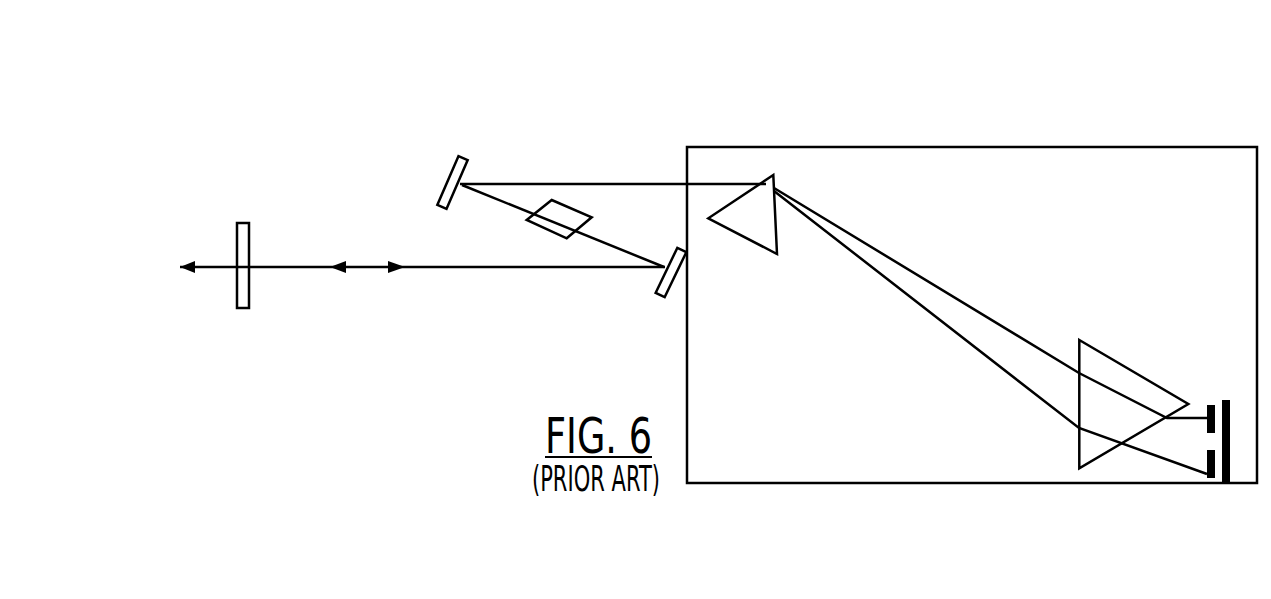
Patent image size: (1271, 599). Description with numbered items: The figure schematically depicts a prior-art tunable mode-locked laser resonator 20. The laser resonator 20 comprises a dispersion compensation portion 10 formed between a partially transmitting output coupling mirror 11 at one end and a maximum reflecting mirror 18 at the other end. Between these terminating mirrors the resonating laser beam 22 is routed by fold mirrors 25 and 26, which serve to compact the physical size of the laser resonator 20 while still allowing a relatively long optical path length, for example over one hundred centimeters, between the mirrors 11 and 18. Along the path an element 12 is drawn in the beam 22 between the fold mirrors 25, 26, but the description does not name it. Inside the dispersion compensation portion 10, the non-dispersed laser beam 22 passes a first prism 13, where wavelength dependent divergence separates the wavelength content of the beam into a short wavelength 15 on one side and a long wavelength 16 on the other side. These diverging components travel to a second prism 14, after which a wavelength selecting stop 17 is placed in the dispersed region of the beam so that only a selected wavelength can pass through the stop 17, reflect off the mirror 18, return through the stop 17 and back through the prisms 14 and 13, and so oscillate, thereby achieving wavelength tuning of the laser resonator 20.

The dispersion compensation portion 10 is at (1033, 147).
The output coupling mirror 11 is at (222, 242).
The modulator 12 is at (538, 208).
The first prism 13 is at (742, 243).
The second prism 14 is at (1079, 332).
The short wavelength 15 is at (970, 352).
The long wavelength 16 is at (939, 283).
The wavelength selecting stop 17 is at (1200, 456).
The maximum reflecting mirror 18 is at (1222, 398).
The tunable mode-locked laser resonator 20 is at (700, 67).
The laser beam 22 is at (608, 183).
The fold mirror 25 is at (445, 174).
The fold mirror 26 is at (660, 282).